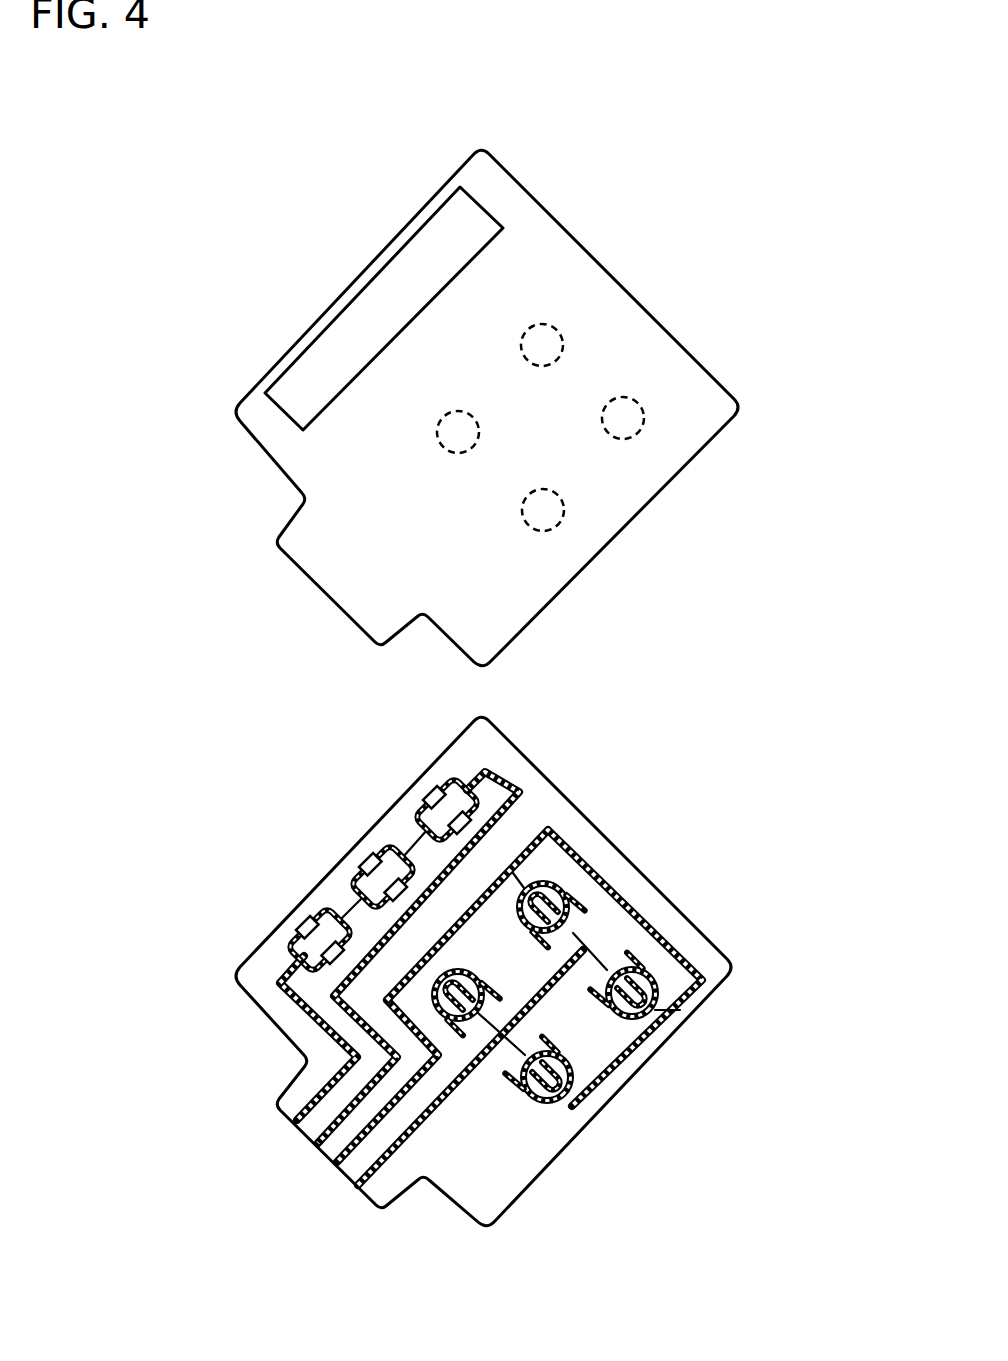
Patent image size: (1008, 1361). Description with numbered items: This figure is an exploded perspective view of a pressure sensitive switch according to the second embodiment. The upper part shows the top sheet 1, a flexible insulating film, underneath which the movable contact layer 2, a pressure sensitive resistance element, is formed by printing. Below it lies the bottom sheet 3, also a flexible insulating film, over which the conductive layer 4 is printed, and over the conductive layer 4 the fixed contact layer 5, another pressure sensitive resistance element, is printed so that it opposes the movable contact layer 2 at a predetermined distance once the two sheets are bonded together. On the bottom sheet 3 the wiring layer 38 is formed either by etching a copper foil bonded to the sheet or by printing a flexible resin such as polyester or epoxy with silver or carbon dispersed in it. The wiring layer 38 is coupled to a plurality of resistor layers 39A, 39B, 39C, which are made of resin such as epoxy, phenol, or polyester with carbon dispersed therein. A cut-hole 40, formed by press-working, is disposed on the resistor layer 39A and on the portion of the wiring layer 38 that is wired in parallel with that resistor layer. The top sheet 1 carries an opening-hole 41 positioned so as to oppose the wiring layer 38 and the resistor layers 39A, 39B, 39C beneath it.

The top sheet 1 is at (692, 373).
The movable contact layer 2 is at (560, 512).
The bottom sheet 3 is at (665, 923).
The conductive layer 4 is at (610, 1082).
The fixed contact layer 5 is at (653, 1003).
The wiring layer 38 is at (302, 1010).
The resistor layer 39A is at (456, 818).
The resistor layer 39B is at (400, 892).
The resistor layer 39C is at (340, 953).
The cut-hole 40 is at (432, 792).
The opening-hole 41 is at (316, 358).